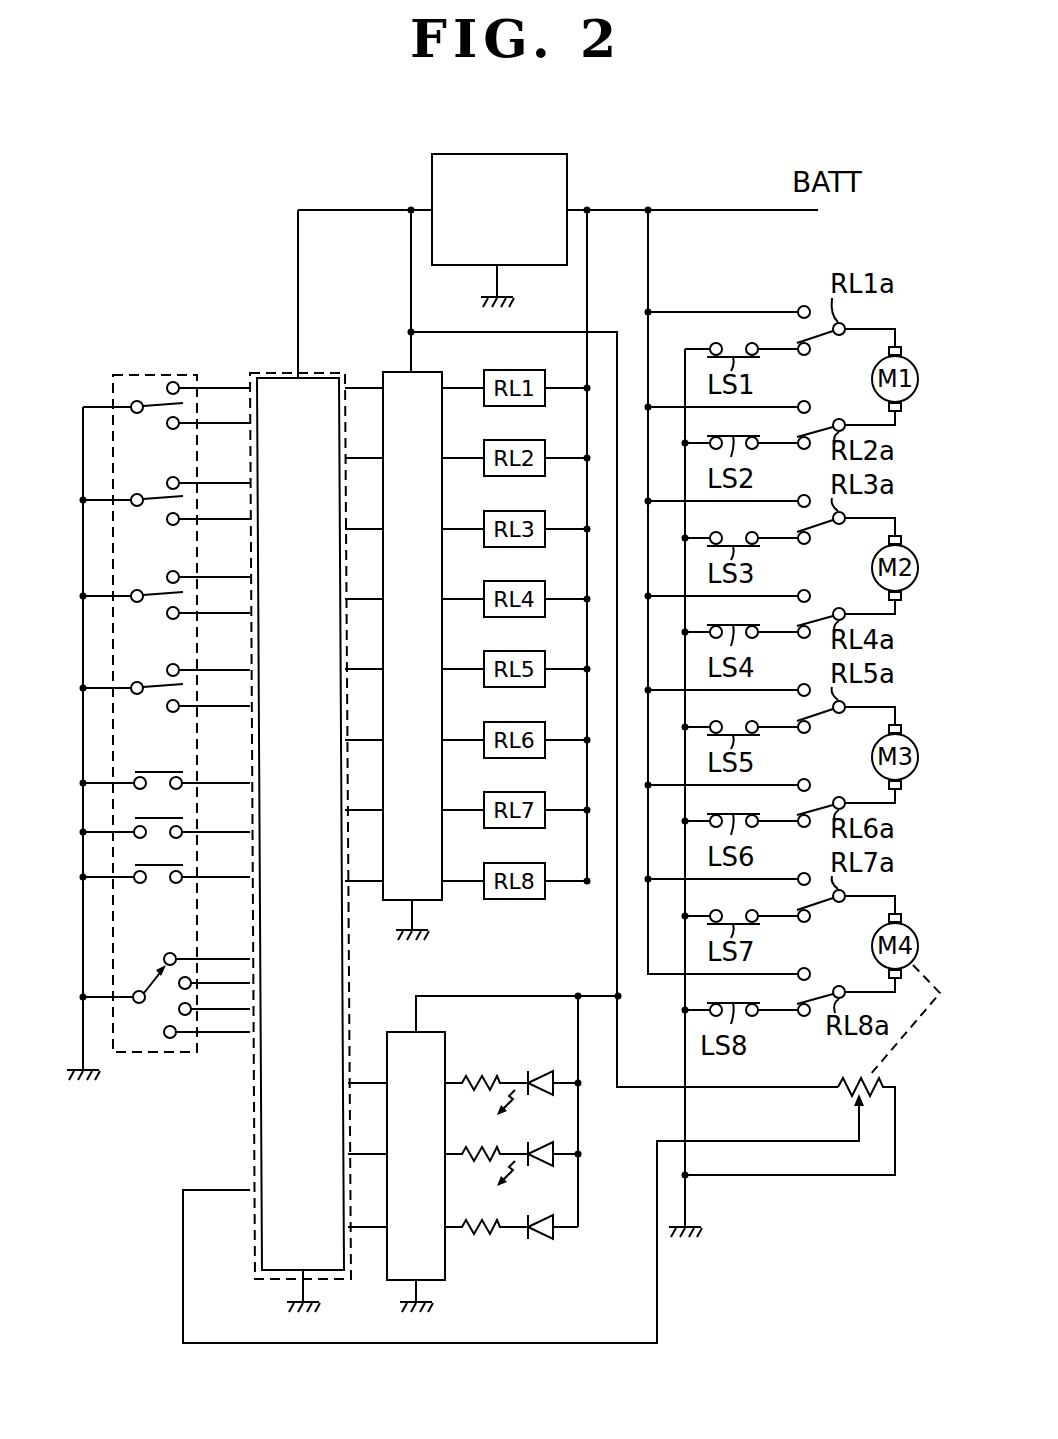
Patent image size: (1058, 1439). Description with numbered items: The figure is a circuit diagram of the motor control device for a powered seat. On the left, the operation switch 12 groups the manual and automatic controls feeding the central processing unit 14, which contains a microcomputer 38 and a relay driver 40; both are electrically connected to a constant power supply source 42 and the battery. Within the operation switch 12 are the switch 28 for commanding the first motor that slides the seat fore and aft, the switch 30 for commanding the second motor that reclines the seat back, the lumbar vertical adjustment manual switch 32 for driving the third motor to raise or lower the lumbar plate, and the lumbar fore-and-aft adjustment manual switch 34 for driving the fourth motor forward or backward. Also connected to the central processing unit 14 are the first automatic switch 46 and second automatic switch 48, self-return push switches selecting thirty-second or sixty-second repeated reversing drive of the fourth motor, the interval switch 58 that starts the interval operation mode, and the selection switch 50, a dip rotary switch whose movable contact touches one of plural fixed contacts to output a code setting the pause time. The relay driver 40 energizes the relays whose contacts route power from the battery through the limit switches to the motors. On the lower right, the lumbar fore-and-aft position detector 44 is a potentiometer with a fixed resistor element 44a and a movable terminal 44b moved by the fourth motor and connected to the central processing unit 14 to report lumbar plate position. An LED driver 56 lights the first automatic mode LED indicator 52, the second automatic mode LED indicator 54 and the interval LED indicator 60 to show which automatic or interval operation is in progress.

The operation switch 12 is at (137, 370).
The central processing unit 14 is at (278, 370).
The switch 28 is at (158, 420).
The switch 30 is at (158, 513).
The lumbar vertical adjustment manual switch 32 is at (158, 606).
The lumbar fore-and-aft adjustment manual switch 34 is at (158, 698).
The microcomputer 38 is at (267, 1095).
The relay driver 40 is at (398, 372).
The constant power supply source 42 is at (567, 190).
The lumbar fore-and-aft position detector 44 is at (846, 1066).
The fixed resistor element 44a is at (880, 1078).
The movable terminal 44b is at (856, 1118).
The first automatic switch 46 is at (172, 813).
The second automatic switch 48 is at (172, 860).
The selection switch 50 is at (158, 975).
The first automatic mode LED indicator 52 is at (540, 1072).
The second automatic mode LED indicator 54 is at (543, 1147).
The LED driver 56 is at (445, 1260).
The interval switch 58 is at (172, 766).
The interval LED indicator 60 is at (543, 1237).